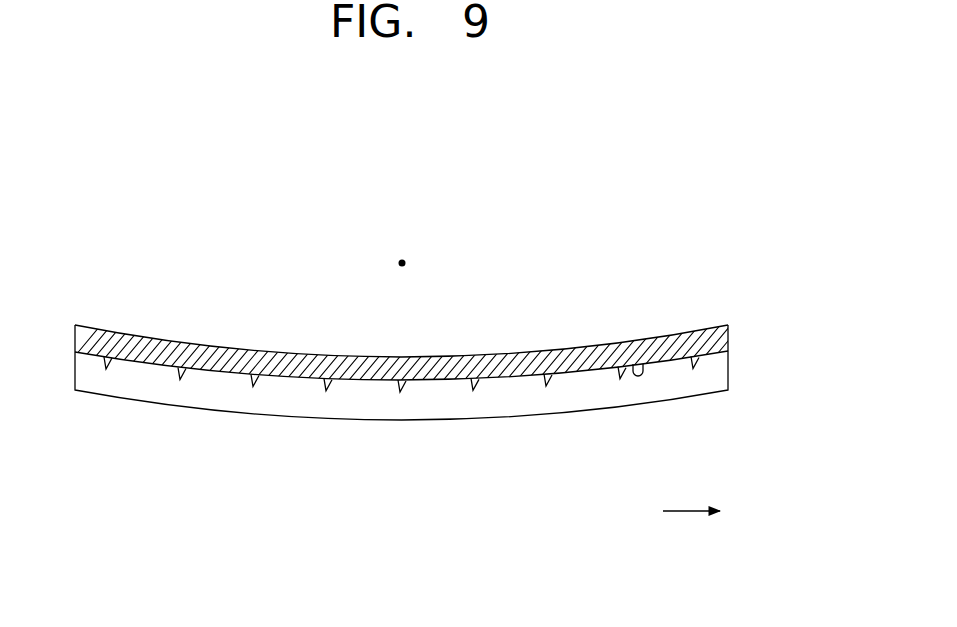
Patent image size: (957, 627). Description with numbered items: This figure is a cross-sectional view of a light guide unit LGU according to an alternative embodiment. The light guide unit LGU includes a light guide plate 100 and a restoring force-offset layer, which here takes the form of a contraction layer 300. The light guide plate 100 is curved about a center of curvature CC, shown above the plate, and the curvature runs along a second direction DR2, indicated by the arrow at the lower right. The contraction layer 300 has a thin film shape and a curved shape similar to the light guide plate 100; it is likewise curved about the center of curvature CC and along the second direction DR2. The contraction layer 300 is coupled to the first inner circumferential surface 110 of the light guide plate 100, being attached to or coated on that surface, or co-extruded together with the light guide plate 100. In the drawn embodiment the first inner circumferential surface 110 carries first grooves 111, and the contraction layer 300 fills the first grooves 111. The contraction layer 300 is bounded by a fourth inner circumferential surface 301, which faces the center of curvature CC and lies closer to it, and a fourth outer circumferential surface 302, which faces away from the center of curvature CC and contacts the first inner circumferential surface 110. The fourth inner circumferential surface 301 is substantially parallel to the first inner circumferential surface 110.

The light guide plate 100 is at (742, 372).
The first inner circumferential surface 110 is at (369, 355).
The first grooves 111 is at (472, 374).
The contraction layer 300 is at (655, 283).
The fourth inner circumferential surface 301 is at (566, 348).
The fourth outer circumferential surface 302 is at (638, 365).
The center of curvature CC is at (402, 259).
The light guide unit LGU is at (674, 200).
The second direction DR2 is at (719, 512).